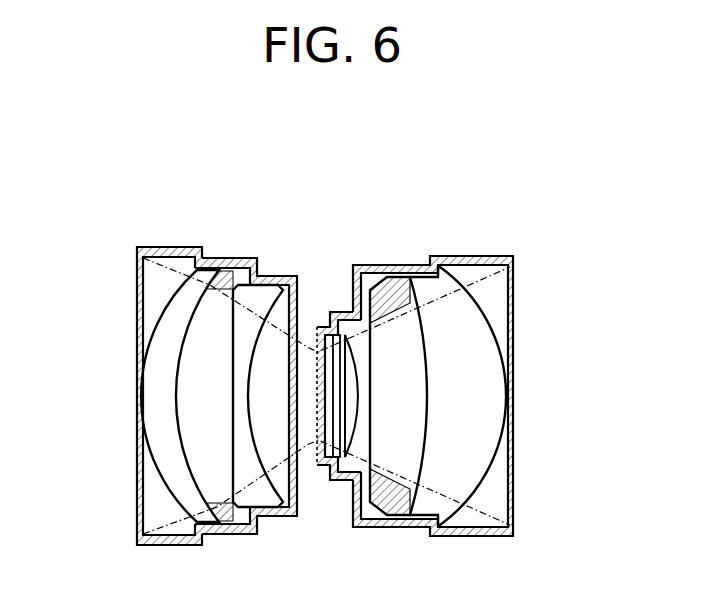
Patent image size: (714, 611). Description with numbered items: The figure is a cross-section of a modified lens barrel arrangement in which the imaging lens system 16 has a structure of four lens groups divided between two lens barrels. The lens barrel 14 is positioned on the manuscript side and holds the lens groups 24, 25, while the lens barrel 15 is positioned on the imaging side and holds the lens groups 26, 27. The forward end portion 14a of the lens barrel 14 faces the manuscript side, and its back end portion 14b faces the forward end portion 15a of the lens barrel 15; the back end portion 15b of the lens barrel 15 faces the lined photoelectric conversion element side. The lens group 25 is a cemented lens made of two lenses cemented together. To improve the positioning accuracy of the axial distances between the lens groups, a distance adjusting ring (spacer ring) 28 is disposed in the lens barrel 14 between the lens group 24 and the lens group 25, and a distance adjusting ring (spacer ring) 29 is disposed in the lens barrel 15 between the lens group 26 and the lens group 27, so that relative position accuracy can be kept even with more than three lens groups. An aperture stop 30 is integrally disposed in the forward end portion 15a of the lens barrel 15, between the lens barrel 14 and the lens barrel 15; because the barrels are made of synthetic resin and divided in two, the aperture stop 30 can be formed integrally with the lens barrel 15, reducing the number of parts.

The lens barrel 14 is at (242, 247).
The forward end portion 14a is at (160, 247).
The back end portion 14b is at (283, 276).
The lens barrel 15 is at (452, 242).
The forward end portion 15a is at (335, 312).
The back end portion 15b is at (505, 257).
The imaging lens system 16 is at (398, 172).
The lens group 24 is at (150, 418).
The lens group 25 is at (237, 408).
The lens group 26 is at (498, 403).
The lens group 27 is at (363, 425).
The distance adjusting ring 28 is at (193, 298).
The distance adjusting ring 29 is at (390, 521).
The aperture stop 30 is at (323, 443).